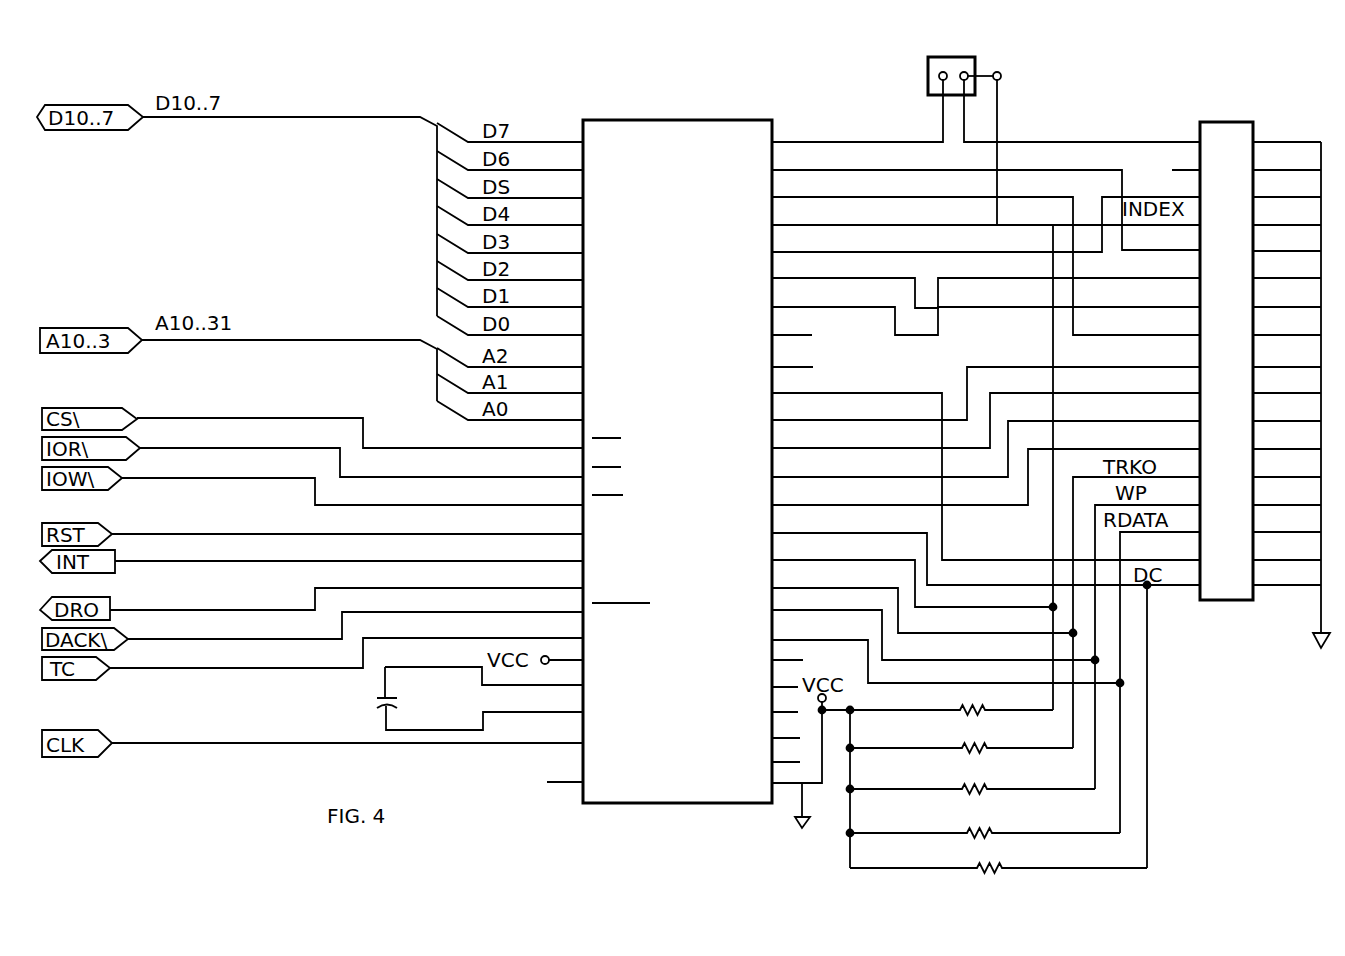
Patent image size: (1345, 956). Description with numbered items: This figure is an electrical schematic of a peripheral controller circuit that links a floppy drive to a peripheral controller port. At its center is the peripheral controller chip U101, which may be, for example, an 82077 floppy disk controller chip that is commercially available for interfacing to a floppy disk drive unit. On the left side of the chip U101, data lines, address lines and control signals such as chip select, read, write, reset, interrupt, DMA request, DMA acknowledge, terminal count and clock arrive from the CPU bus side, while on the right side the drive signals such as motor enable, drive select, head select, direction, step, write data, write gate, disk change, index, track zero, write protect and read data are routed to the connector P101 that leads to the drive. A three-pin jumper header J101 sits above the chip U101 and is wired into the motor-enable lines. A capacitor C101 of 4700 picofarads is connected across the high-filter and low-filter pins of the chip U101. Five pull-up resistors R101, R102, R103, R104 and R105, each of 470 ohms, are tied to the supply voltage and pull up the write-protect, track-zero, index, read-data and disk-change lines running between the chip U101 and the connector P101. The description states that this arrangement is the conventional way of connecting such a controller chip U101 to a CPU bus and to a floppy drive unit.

The peripheral controller chip U101 is at (677, 447).
The jumper header J101 is at (972, 74).
The connector P101 is at (1265, 372).
The capacitor 4700pf C101 is at (480, 698).
The pull-up resistor 470 R101 is at (937, 710).
The pull-up resistor 470 R102 is at (961, 751).
The pull-up resistor 470 R103 is at (972, 791).
The pull-up resistor 470 R104 is at (985, 833).
The pull-up resistor 470 R105 is at (998, 869).